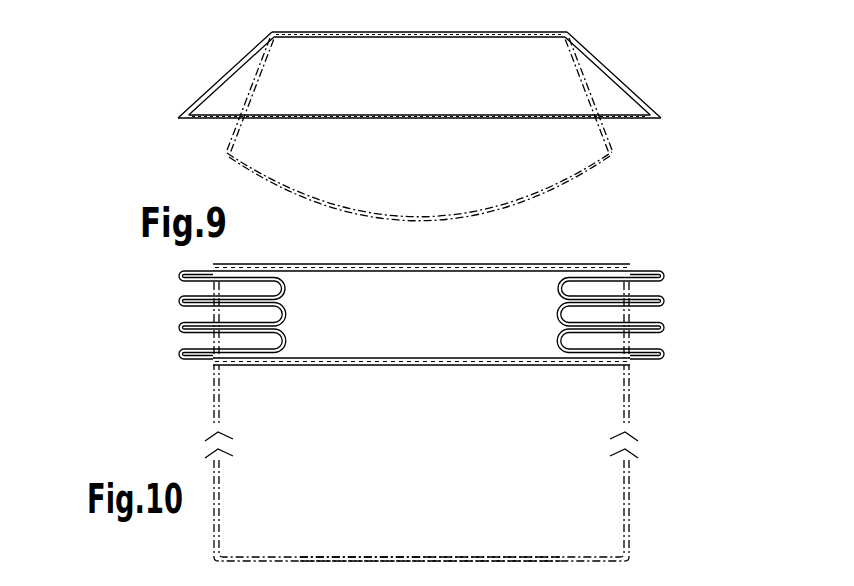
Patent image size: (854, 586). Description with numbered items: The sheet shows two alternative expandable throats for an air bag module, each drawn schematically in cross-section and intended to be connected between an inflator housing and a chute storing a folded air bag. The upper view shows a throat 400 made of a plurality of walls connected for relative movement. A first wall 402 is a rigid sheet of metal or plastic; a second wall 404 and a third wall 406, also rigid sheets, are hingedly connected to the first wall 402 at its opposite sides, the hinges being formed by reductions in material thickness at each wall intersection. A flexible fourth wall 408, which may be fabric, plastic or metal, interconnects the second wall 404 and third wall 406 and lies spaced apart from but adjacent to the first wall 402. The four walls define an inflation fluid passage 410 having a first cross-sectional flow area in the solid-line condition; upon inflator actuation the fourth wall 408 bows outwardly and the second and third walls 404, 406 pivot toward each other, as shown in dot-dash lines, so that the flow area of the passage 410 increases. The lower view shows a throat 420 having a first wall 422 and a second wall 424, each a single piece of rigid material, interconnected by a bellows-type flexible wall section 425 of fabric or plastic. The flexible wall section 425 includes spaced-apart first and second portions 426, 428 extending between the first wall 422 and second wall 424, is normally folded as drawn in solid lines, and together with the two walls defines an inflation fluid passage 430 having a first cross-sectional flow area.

In FIG. 9, the throat 400 is at (150, 99).
In FIG. 9, the first wall 402 is at (430, 26).
In FIG. 9, the second wall 404 is at (225, 78).
In FIG. 9, the third wall 406 is at (617, 78).
In FIG. 9, the fourth wall 408 is at (435, 123).
In FIG. 9, the inflation fluid passage 410 is at (388, 83).
In FIG. 10, the throat 420 is at (148, 356).
In FIG. 10, the first wall 422 is at (567, 263).
In FIG. 10, the second wall 424 is at (315, 367).
In FIG. 10, the flexible wall section 425 is at (680, 328).
In FIG. 10, the first portion 426 is at (180, 300).
In FIG. 10, the second portion 428 is at (665, 300).
In FIG. 10, the inflation fluid passage 430 is at (457, 317).